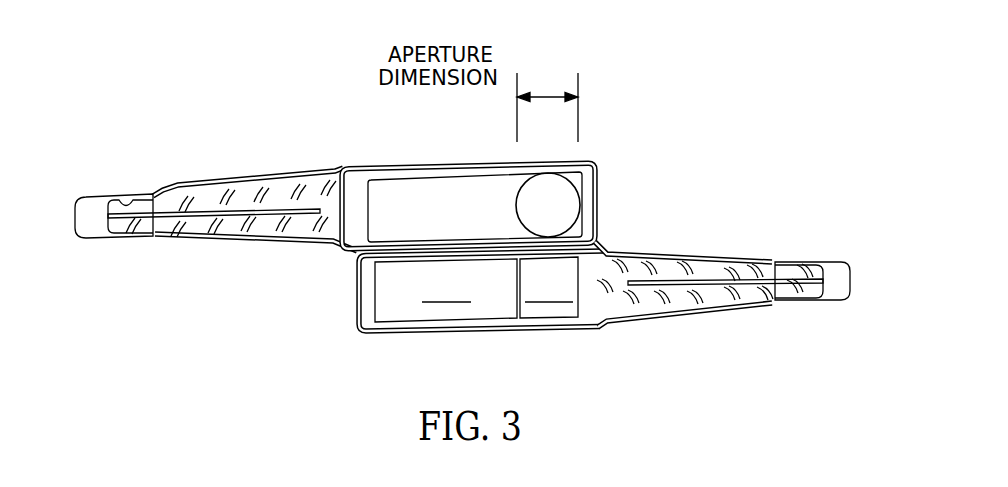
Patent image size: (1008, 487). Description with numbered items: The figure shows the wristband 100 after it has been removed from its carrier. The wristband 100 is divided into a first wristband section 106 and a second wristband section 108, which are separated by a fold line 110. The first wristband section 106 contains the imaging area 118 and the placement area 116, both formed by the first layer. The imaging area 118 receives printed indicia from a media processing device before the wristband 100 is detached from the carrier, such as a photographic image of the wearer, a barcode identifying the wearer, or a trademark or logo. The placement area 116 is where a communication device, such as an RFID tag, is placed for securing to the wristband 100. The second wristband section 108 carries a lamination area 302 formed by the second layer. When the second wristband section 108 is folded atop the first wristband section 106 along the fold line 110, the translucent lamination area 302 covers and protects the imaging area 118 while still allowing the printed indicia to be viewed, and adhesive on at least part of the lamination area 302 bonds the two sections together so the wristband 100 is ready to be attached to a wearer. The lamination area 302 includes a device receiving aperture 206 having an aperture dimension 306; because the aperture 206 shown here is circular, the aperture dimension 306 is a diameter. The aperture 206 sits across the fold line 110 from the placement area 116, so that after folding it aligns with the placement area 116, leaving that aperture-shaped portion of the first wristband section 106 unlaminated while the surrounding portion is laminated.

The wristband 100 is at (308, 240).
The first wristband section 106 is at (588, 308).
The second wristband section 108 is at (353, 193).
The fold line 110 is at (356, 256).
The placement area 116 is at (549, 287).
The imaging area 118 is at (446, 290).
The device receiving aperture 206 is at (542, 197).
The lamination area 302 is at (430, 195).
The aperture dimension 306 is at (548, 96).